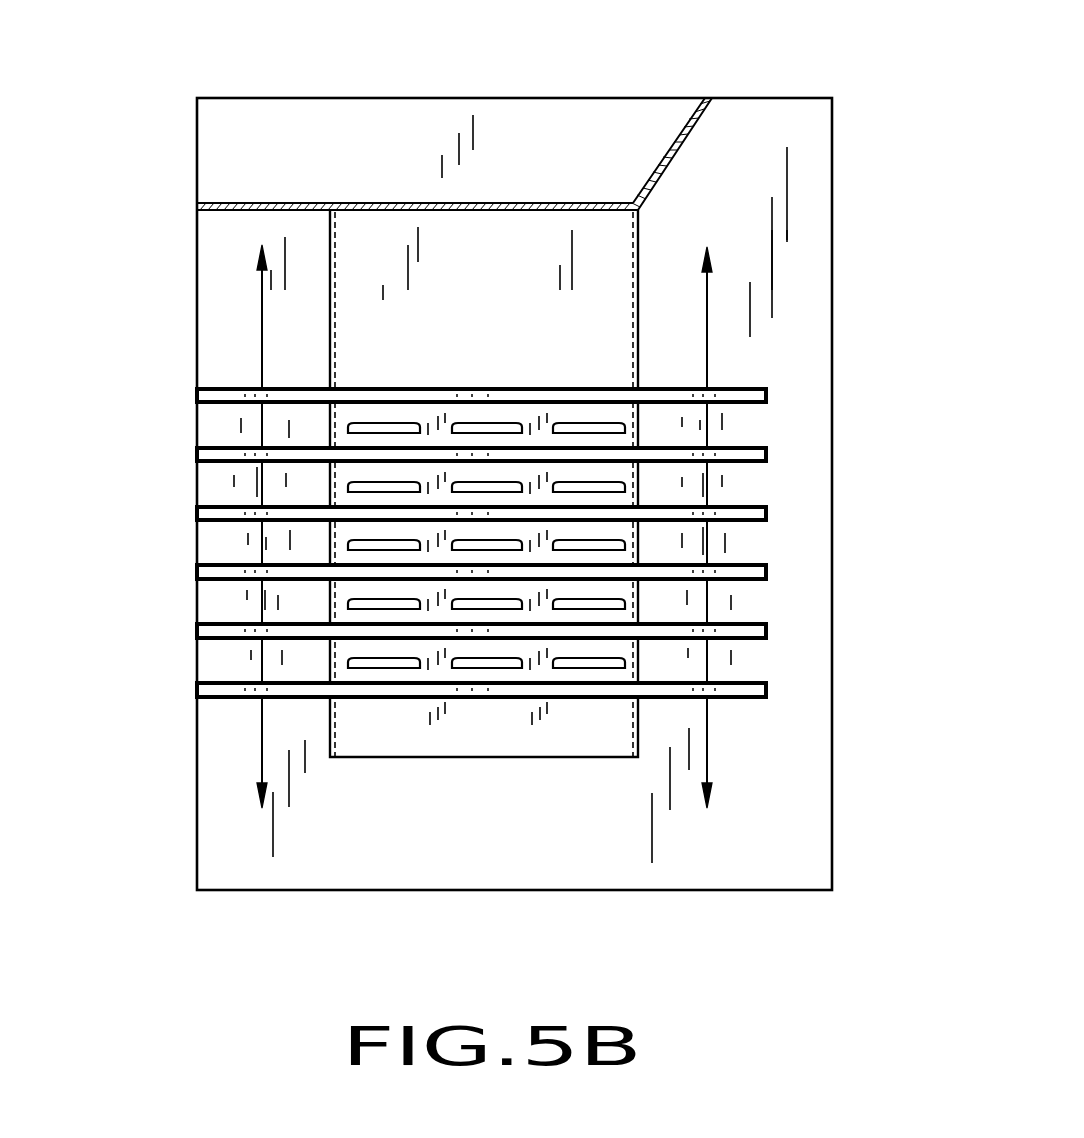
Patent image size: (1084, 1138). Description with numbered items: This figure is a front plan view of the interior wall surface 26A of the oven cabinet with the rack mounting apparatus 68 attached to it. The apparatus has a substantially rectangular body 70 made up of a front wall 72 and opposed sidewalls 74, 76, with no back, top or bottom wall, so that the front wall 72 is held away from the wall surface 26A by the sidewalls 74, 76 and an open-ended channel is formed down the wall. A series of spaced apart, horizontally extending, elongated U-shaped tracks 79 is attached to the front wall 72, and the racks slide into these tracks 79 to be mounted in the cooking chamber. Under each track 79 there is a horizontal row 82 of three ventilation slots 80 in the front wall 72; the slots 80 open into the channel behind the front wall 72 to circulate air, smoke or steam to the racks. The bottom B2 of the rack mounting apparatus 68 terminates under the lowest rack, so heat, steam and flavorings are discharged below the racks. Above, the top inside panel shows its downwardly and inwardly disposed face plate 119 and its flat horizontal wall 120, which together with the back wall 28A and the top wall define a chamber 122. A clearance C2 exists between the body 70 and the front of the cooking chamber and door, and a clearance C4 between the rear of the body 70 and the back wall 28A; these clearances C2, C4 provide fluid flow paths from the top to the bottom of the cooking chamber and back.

The interior wall surface of side wall 26A is at (309, 236).
The interior wall surface of back wall 28A is at (197, 262).
The rack mounting apparatus 68 is at (495, 240).
The body 70 is at (640, 338).
The front wall 72 is at (397, 367).
The sidewall 74 is at (640, 488).
The sidewall 76 is at (330, 488).
The U-shaped tracks 79 is at (218, 516).
The ventilation slots 80 is at (350, 663).
The horizontal row of slots 82 is at (348, 413).
The face plate 119 is at (683, 150).
The horizontal wall 120 is at (552, 212).
The chamber 122 is at (430, 131).
The bottom of rack mounting apparatus B2 is at (517, 758).
The clearance C2 is at (707, 302).
The clearance C4 is at (262, 297).